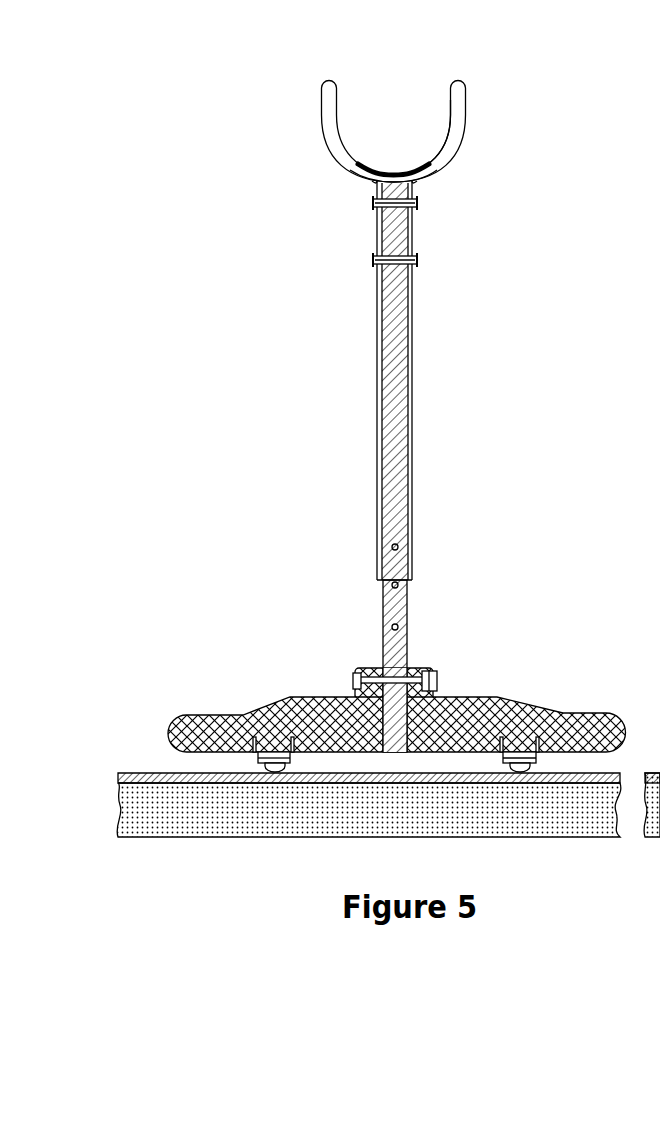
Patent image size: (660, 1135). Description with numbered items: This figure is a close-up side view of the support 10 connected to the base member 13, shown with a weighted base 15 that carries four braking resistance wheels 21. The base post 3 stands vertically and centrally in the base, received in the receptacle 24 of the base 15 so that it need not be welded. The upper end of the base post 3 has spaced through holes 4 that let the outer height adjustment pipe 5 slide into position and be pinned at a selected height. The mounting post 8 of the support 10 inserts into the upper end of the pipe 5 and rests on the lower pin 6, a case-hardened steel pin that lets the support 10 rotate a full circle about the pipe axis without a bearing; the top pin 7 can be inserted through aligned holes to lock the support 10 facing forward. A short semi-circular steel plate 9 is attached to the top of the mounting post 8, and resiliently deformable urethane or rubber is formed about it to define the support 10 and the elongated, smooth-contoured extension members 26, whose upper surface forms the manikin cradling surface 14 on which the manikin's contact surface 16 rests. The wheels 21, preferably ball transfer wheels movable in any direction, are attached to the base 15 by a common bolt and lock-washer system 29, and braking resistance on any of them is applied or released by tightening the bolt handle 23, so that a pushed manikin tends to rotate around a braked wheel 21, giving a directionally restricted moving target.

The base post 3 is at (383, 645).
The through holes 4 is at (380, 547).
The outer height adjustment pipe 5 is at (392, 353).
The lower pin 6 is at (372, 260).
The top pin 7 is at (382, 233).
The mounting post 8 is at (373, 202).
The semi-circular-shaped steel plate 9 is at (427, 177).
The support 10 is at (443, 157).
The base member 13 is at (387, 419).
The manikin cradling surface 14 is at (359, 160).
The weighted base 15 is at (512, 697).
The contact surface 16 is at (423, 667).
The braking resistance wheels 21 is at (262, 758).
The bolt handle 23 is at (271, 768).
The receptacle 24 is at (508, 807).
The extension members 26 is at (465, 112).
The bolt and lock-washer system 29 is at (252, 750).